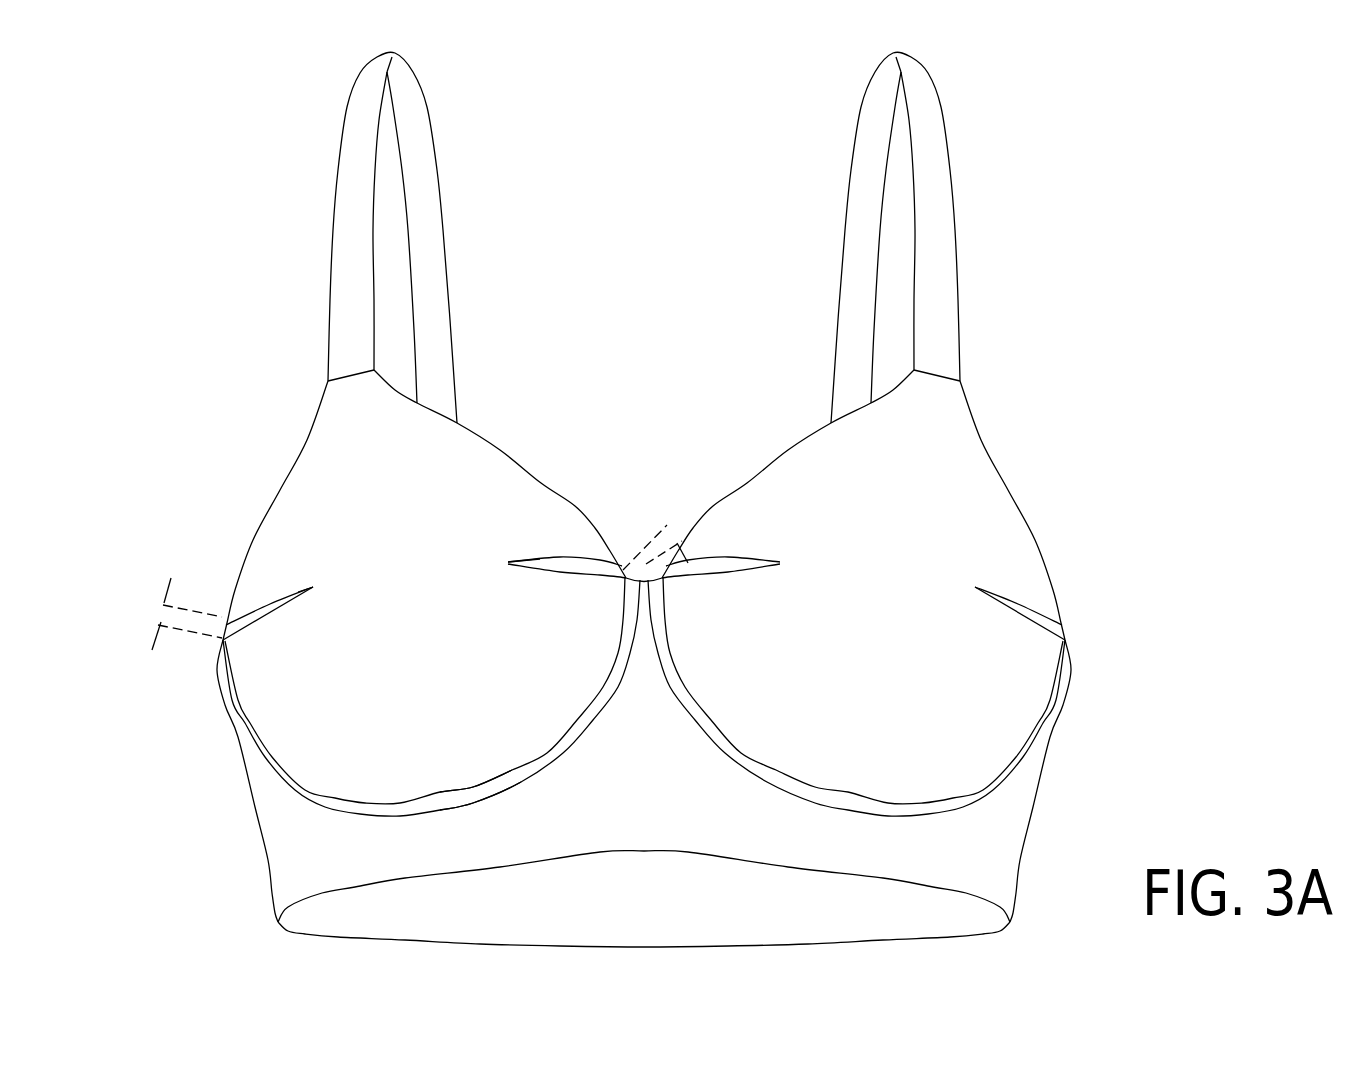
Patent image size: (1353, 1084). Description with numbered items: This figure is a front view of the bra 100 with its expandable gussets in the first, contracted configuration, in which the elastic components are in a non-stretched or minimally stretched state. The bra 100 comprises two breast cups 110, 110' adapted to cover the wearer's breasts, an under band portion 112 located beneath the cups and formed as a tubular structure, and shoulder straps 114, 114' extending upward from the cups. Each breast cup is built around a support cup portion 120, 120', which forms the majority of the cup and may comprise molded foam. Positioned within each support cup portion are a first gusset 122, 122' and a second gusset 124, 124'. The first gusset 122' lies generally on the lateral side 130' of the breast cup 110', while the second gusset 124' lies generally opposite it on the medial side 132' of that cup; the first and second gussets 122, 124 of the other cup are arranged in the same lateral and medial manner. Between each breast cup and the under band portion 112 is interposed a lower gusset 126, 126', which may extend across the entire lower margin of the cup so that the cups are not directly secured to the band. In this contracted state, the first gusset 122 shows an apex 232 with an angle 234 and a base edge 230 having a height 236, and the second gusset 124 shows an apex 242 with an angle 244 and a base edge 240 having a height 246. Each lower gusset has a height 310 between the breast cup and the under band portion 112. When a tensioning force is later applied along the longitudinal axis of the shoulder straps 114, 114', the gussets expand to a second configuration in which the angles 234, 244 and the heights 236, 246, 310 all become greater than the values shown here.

The bra 100 is at (581, 499).
The breast cup 110 is at (278, 507).
The breast cup 110' is at (1011, 507).
The under band portion 112 is at (985, 840).
The shoulder strap 114 is at (367, 237).
The shoulder strap 114' is at (925, 237).
The support cup portion 120 is at (500, 474).
The support cup portion 120' is at (788, 474).
The first gusset 122 is at (282, 603).
The first gusset 122' is at (1016, 623).
The second gusset 124 is at (550, 560).
The second gusset 124' is at (721, 592).
The lower gusset 126 is at (431, 720).
The lower gusset 126' is at (856, 706).
The lateral side 130' is at (1026, 507).
The medial side 132' is at (788, 474).
The base edge 230 is at (217, 622).
The apex 232 is at (311, 587).
The angle 234 is at (266, 603).
The height 236 is at (178, 653).
The base edge 240 is at (626, 563).
The apex 242 is at (508, 561).
The angle 244 is at (572, 575).
The height 246 is at (667, 524).
The height 310 is at (463, 758).